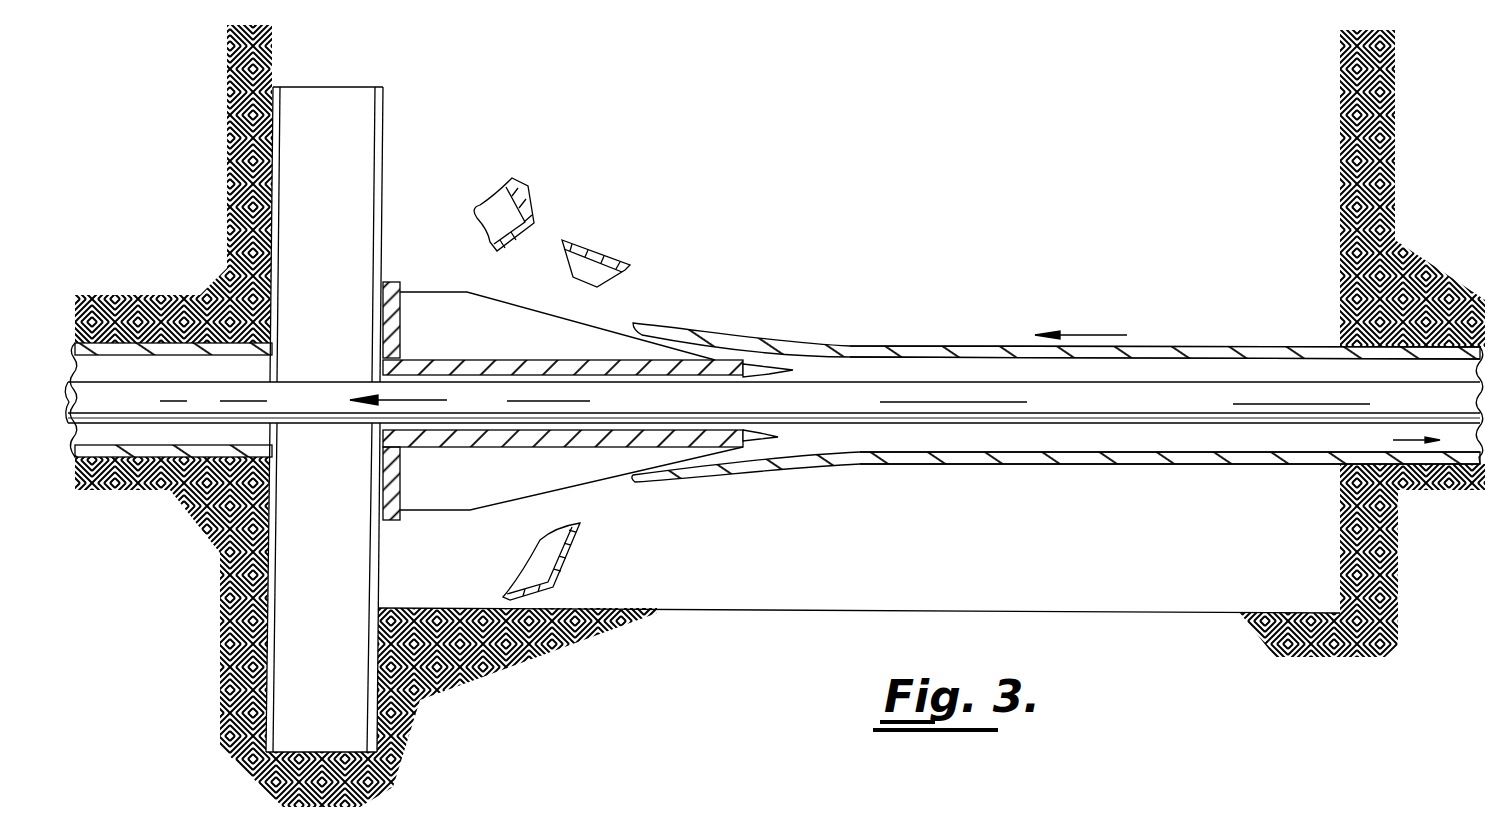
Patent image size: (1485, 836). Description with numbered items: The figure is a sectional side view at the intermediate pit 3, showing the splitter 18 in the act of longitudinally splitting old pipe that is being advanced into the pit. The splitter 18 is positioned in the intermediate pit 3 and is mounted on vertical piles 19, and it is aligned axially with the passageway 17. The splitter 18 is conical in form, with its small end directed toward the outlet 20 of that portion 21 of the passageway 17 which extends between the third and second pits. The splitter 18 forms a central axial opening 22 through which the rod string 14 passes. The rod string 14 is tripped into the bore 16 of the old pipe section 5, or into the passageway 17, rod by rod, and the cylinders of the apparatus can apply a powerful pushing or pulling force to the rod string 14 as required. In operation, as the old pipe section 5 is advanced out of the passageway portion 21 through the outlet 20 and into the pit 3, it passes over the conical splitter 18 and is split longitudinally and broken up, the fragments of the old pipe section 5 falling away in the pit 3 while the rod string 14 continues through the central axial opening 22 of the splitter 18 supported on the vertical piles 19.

The intermediate pit 3 is at (878, 246).
The old pipe section 5 is at (947, 352).
The rod string 14 is at (972, 422).
The bore 16 is at (1277, 370).
The passageway 17 is at (1335, 442).
The splitter 18 is at (507, 360).
The vertical piles 19 is at (383, 183).
The outlet 20 is at (1338, 345).
The passageway portion 21 is at (1405, 443).
The central axial opening 22 is at (663, 376).